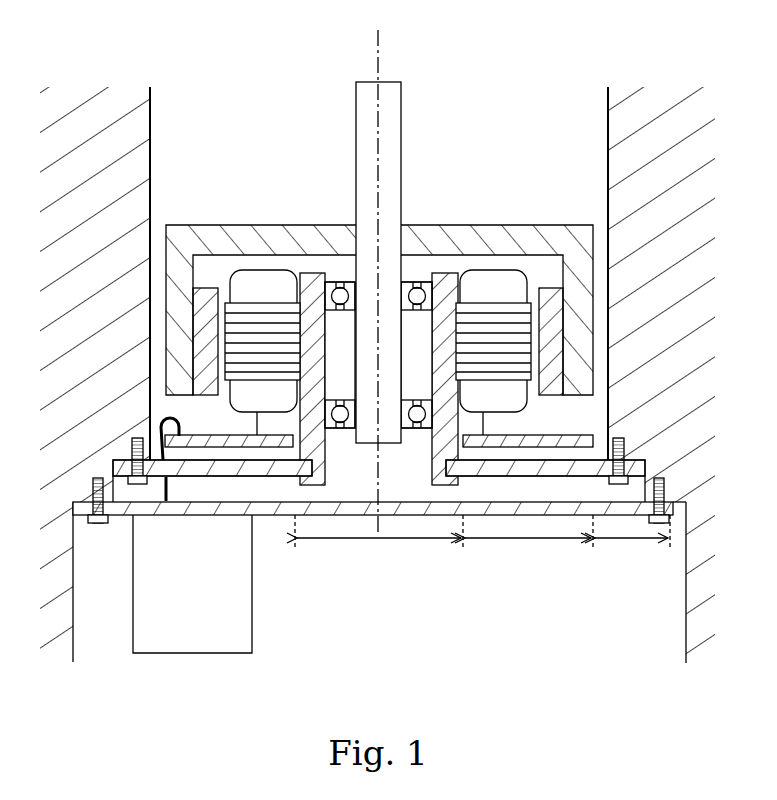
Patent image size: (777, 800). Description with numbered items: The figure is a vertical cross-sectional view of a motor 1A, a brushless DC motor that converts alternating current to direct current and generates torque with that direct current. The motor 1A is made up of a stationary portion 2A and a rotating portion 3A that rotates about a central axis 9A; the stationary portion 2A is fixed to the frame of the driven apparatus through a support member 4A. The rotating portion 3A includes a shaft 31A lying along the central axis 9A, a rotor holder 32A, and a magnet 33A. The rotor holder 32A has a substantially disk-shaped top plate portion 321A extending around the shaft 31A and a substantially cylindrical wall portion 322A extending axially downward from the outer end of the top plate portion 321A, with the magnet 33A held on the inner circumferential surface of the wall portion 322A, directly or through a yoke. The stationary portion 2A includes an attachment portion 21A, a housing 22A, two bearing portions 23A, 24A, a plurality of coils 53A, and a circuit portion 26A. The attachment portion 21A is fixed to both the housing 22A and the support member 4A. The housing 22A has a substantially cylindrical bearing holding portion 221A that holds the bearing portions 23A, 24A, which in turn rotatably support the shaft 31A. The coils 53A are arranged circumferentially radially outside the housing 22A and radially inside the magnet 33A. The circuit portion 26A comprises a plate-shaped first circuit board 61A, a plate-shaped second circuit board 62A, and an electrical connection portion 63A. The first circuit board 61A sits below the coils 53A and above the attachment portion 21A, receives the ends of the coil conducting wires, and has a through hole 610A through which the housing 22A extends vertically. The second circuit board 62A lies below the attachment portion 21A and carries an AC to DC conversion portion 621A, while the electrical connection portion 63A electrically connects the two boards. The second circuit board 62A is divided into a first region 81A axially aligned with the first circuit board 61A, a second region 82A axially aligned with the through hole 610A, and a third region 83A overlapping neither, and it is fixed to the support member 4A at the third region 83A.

The motor 1A is at (275, 95).
The stationary portion 2A is at (122, 537).
The rotating portion 3A is at (346, 171).
The support member 4A is at (622, 132).
The central axis 9A is at (378, 45).
The attachment portion 21A is at (243, 468).
The housing 22A is at (452, 266).
The bearing portion 23A is at (331, 430).
The bearing portion 24A is at (437, 290).
The circuit portion 26A is at (168, 163).
The shaft 31A is at (388, 130).
The rotor holder 32A is at (582, 170).
The magnet 33A is at (557, 380).
The coils 53A is at (483, 285).
The first circuit board 61A is at (257, 420).
The second circuit board 62A is at (208, 508).
The electrical connection portion 63A is at (171, 417).
The first region 81A is at (529, 540).
The second region 82A is at (379, 540).
The third region 83A is at (632, 540).
The bearing holding portion 221A is at (317, 290).
The top plate portion 321A is at (497, 240).
The wall portion 322A is at (575, 293).
The through hole 610A is at (448, 445).
The AC to DC conversion portion 621A is at (230, 608).